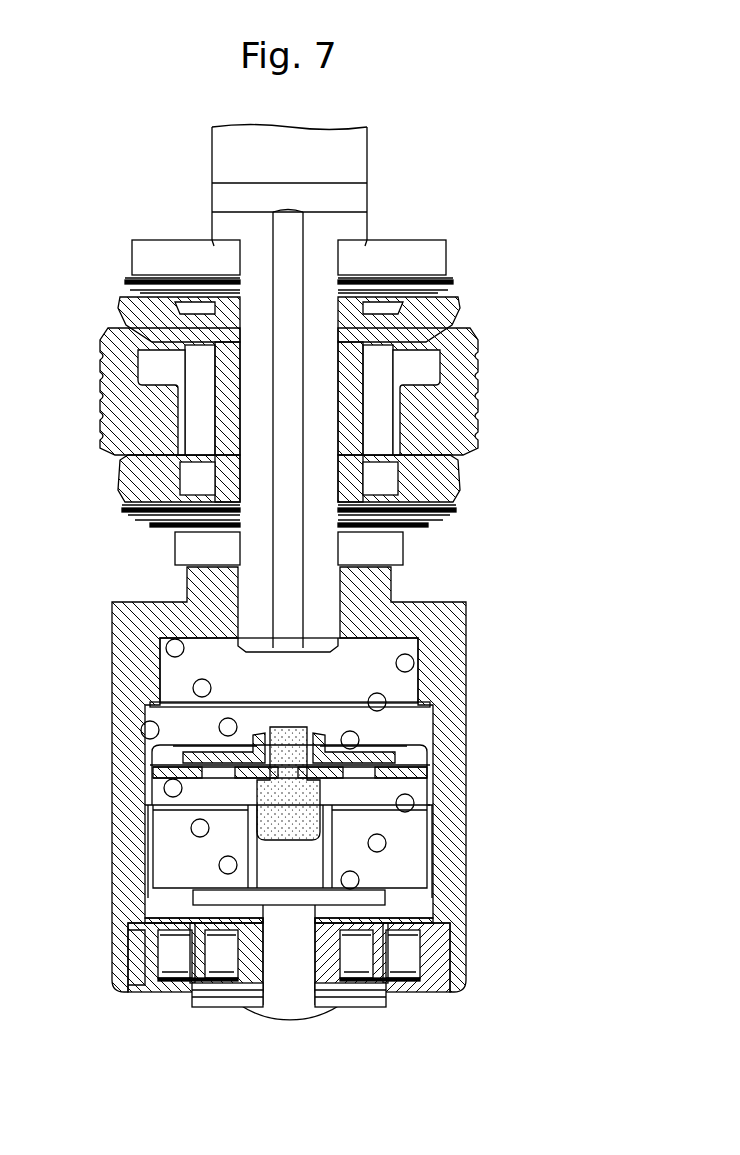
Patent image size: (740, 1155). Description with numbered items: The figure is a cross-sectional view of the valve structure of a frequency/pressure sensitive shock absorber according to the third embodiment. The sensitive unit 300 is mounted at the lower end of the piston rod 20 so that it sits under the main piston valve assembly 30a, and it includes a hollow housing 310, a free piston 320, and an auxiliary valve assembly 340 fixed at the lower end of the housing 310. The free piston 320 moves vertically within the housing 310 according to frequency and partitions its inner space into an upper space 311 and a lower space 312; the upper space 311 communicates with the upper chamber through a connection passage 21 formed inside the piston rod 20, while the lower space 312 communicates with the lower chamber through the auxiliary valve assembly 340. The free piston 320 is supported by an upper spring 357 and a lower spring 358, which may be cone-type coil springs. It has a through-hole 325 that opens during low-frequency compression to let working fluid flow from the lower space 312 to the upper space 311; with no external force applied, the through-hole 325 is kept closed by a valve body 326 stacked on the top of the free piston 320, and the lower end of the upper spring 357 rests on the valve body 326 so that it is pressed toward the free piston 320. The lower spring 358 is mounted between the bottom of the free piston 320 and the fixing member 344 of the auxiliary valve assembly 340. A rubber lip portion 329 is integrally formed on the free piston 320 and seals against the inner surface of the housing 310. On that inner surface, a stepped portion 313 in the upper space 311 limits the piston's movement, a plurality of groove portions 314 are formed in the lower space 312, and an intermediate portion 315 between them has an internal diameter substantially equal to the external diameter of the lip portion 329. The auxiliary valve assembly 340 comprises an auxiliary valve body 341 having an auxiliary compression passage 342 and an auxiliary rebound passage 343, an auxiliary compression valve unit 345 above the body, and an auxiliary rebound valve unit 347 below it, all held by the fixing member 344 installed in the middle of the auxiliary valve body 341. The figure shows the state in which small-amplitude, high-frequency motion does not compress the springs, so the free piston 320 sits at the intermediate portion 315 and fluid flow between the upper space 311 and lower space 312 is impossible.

The piston rod 20 is at (215, 152).
The connection passage 21 is at (290, 250).
The main piston valve assembly 30a is at (495, 281).
The sensitive unit 300 is at (305, 802).
The housing 310 is at (455, 626).
The upper space 311 is at (241, 681).
The lower space 312 is at (372, 858).
The stepped portion 313 is at (386, 704).
The groove portion 314 is at (433, 843).
The intermediate portion 315 is at (145, 736).
The free piston 320 is at (433, 780).
The through-hole 325 is at (165, 790).
The valve body 326 is at (361, 742).
The lip portion 329 is at (425, 757).
The auxiliary valve assembly 340 is at (325, 997).
The auxiliary valve body 341 is at (440, 955).
The auxiliary compression passage 342 is at (410, 990).
The auxiliary rebound passage 343 is at (215, 980).
The fixing member 344 is at (288, 1013).
The auxiliary compression valve unit 345 is at (165, 919).
The auxiliary rebound valve unit 347 is at (192, 996).
The upper spring 357 is at (220, 725).
The lower spring 358 is at (220, 862).